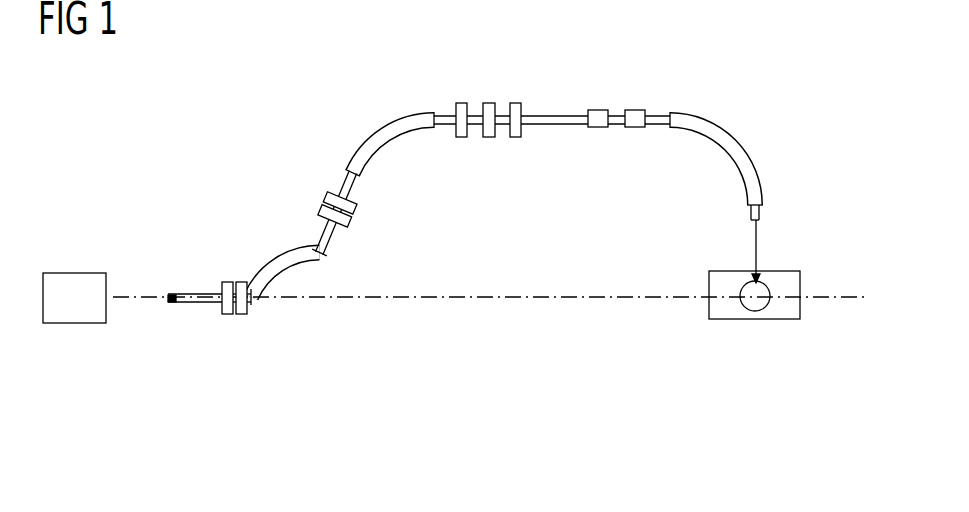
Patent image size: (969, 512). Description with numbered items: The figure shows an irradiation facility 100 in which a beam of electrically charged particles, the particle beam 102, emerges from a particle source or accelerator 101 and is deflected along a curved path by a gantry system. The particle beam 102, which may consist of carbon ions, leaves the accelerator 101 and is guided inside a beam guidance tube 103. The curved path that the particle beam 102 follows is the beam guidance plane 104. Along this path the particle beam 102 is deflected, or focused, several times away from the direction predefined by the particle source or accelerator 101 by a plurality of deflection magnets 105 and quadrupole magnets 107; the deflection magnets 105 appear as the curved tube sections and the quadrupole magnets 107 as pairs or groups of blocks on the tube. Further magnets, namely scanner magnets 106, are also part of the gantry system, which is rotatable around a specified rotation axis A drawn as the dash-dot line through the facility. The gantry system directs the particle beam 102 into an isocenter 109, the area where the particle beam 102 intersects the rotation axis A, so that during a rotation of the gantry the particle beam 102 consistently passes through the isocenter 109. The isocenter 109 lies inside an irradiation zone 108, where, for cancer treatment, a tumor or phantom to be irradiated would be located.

The irradiation facility 100 is at (185, 415).
The particle source or accelerator 101 is at (74, 324).
The particle beam 102 is at (137, 300).
The beam guidance tube 103 is at (199, 304).
The beam guidance plane 104 is at (270, 186).
The deflection magnets 105 is at (392, 130).
The scanner magnets 106 is at (628, 110).
The quadrupole magnets 107 is at (241, 282).
The irradiation zone 108 is at (778, 320).
The isocenter 109 is at (745, 306).
The rotation axis A is at (842, 299).